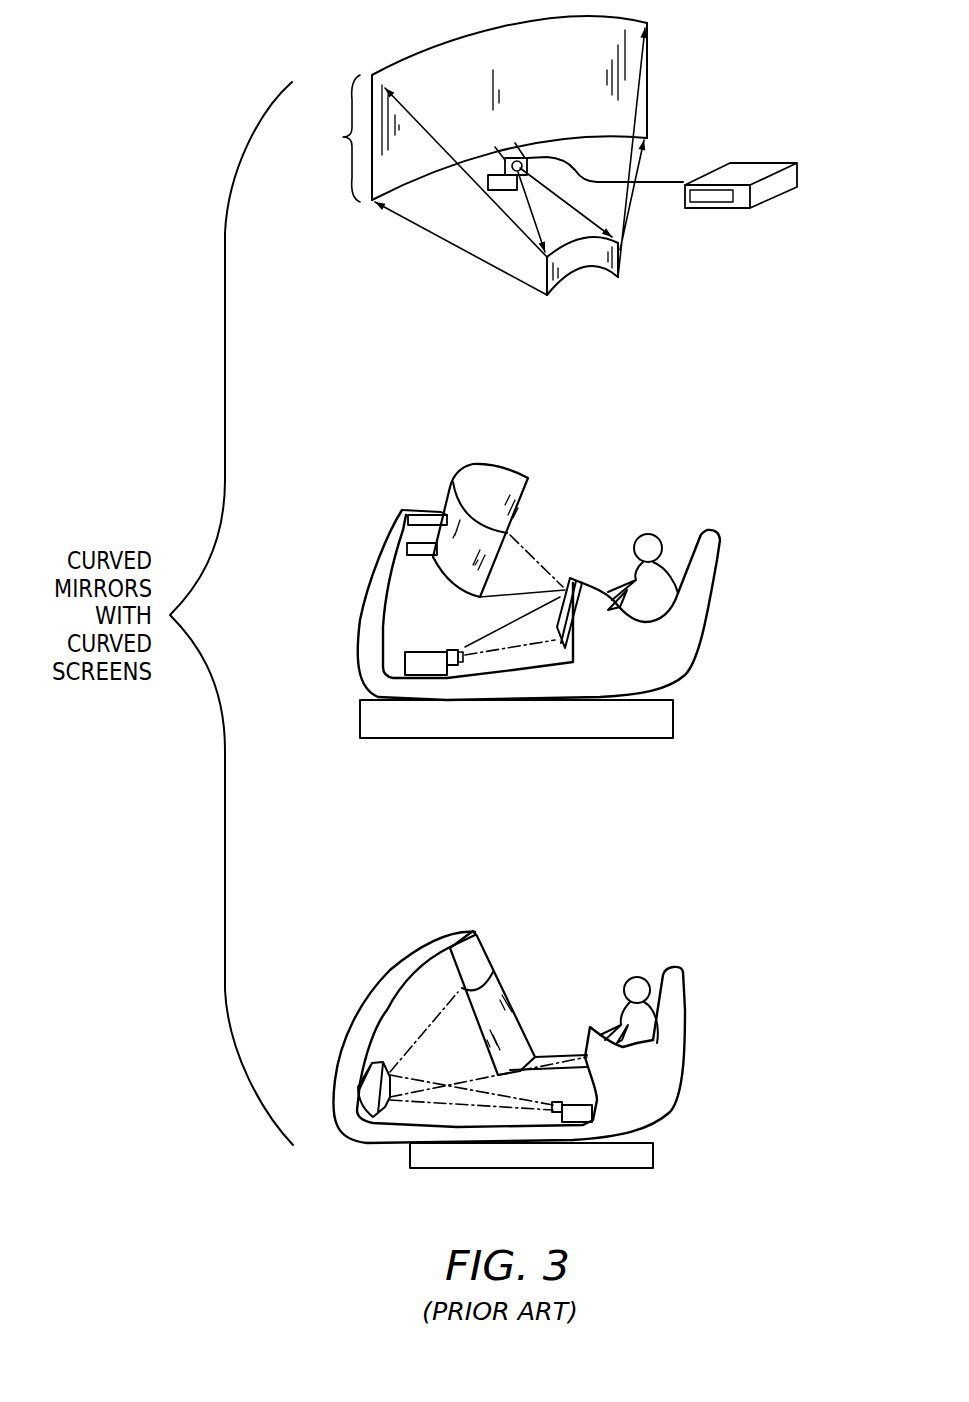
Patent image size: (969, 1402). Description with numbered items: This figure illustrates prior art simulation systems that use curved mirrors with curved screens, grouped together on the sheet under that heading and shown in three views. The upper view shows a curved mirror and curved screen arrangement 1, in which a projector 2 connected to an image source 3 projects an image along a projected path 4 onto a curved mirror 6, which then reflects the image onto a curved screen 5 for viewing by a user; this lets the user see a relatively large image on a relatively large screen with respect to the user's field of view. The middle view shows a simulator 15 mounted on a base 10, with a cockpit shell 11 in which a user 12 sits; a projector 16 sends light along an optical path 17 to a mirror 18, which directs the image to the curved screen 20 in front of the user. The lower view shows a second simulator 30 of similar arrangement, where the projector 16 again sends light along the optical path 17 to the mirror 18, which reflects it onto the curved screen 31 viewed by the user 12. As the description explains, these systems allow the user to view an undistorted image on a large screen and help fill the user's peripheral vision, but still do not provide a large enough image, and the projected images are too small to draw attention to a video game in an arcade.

The curved mirror and screen display system 1 is at (340, 138).
The projector 2 is at (482, 167).
The image generator 3 is at (750, 172).
The projected light rays 4 is at (577, 213).
The curved screen 5 is at (580, 268).
The curved mirror 6 is at (647, 72).
The simulator base platform 10 is at (357, 740).
The cockpit shell 11 is at (700, 633).
The pilot/operator 12 is at (649, 545).
The curved mirror simulator display 15 is at (526, 597).
The projector 16 is at (428, 657).
The optical path 17 is at (507, 658).
The mirror 18 is at (580, 580).
The curved screen housing 20 is at (498, 477).
The simulator cockpit 30 is at (403, 1172).
The curved screen 31 is at (512, 1007).